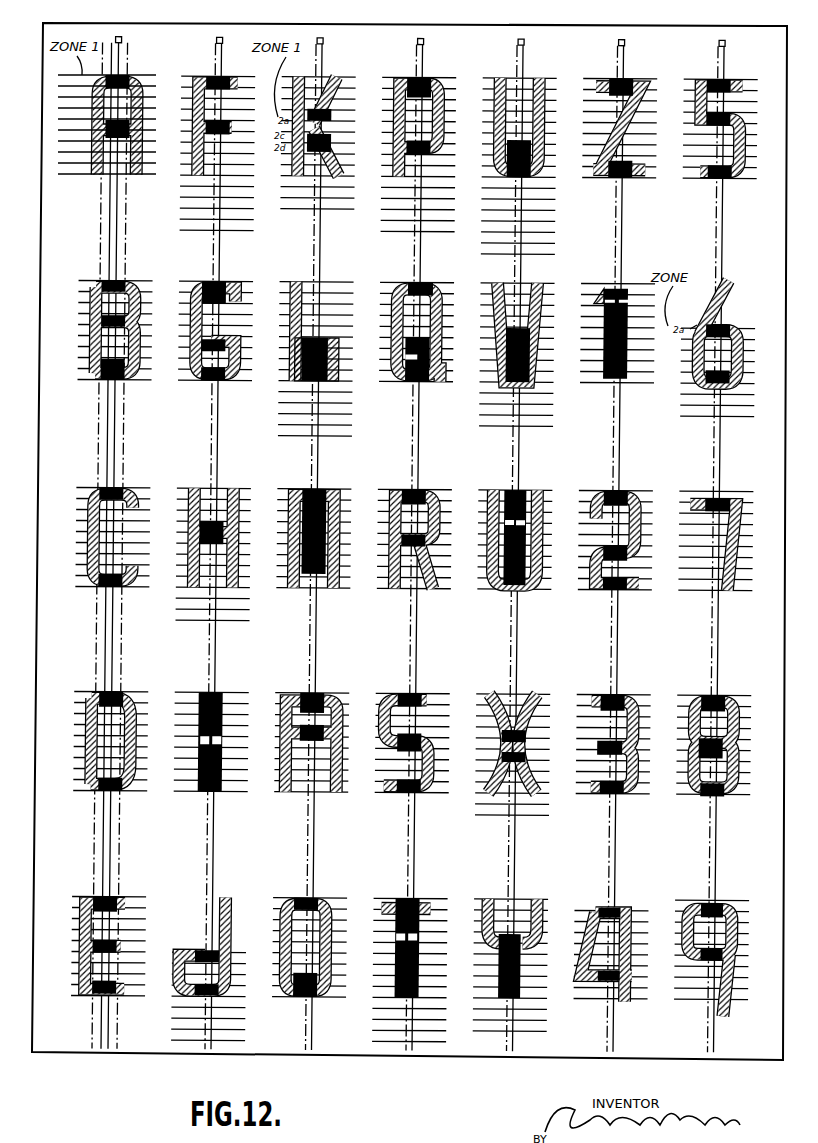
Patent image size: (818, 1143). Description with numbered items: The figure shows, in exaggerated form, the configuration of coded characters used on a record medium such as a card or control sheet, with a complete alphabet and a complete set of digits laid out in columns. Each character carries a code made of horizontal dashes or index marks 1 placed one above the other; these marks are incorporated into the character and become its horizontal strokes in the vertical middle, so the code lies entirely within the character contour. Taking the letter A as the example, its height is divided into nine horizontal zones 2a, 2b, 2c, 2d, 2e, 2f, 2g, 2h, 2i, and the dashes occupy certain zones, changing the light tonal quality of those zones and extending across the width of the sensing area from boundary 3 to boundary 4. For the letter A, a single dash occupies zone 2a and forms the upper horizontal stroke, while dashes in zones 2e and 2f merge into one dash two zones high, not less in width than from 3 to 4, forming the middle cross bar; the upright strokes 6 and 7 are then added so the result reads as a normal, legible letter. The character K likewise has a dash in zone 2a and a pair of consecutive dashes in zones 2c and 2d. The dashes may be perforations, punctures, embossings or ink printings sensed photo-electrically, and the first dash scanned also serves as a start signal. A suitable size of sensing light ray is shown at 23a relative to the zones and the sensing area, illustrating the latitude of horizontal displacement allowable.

The index marks 1 is at (140, 110).
The horizontal zone a 2a is at (107, 80).
The horizontal zone b 2b is at (107, 91).
The horizontal zone c 2c is at (107, 102).
The horizontal zone d 2d is at (107, 113).
The horizontal zone e 2e is at (107, 124).
The horizontal zone f 2f is at (107, 135).
The horizontal zone g 2g is at (107, 146).
The horizontal zone h 2h is at (107, 157).
The horizontal zone i 2i is at (107, 168).
The sensing area boundary 3 is at (95, 546).
The sensing area boundary 4 is at (121, 546).
The upright stroke 6 is at (143, 172).
The upright stroke 7 is at (93, 170).
The light ray 23a is at (216, 40).